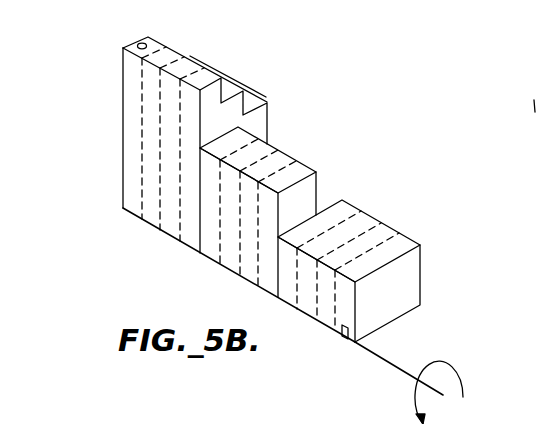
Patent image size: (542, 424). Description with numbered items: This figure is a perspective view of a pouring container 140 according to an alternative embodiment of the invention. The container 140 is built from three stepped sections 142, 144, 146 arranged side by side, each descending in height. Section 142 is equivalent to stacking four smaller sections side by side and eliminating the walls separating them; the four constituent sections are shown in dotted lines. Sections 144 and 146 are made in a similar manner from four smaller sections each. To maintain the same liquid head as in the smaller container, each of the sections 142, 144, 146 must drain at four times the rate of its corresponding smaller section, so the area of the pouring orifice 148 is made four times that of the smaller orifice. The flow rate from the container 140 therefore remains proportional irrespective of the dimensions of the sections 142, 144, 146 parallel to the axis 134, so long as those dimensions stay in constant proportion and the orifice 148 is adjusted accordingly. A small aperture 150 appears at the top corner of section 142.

The axis 134 is at (458, 358).
The container 140 is at (112, 242).
The section 142 is at (137, 93).
The section 144 is at (282, 161).
The section 146 is at (397, 241).
The pouring orifice 148 is at (342, 336).
The aperture 150 is at (145, 43).